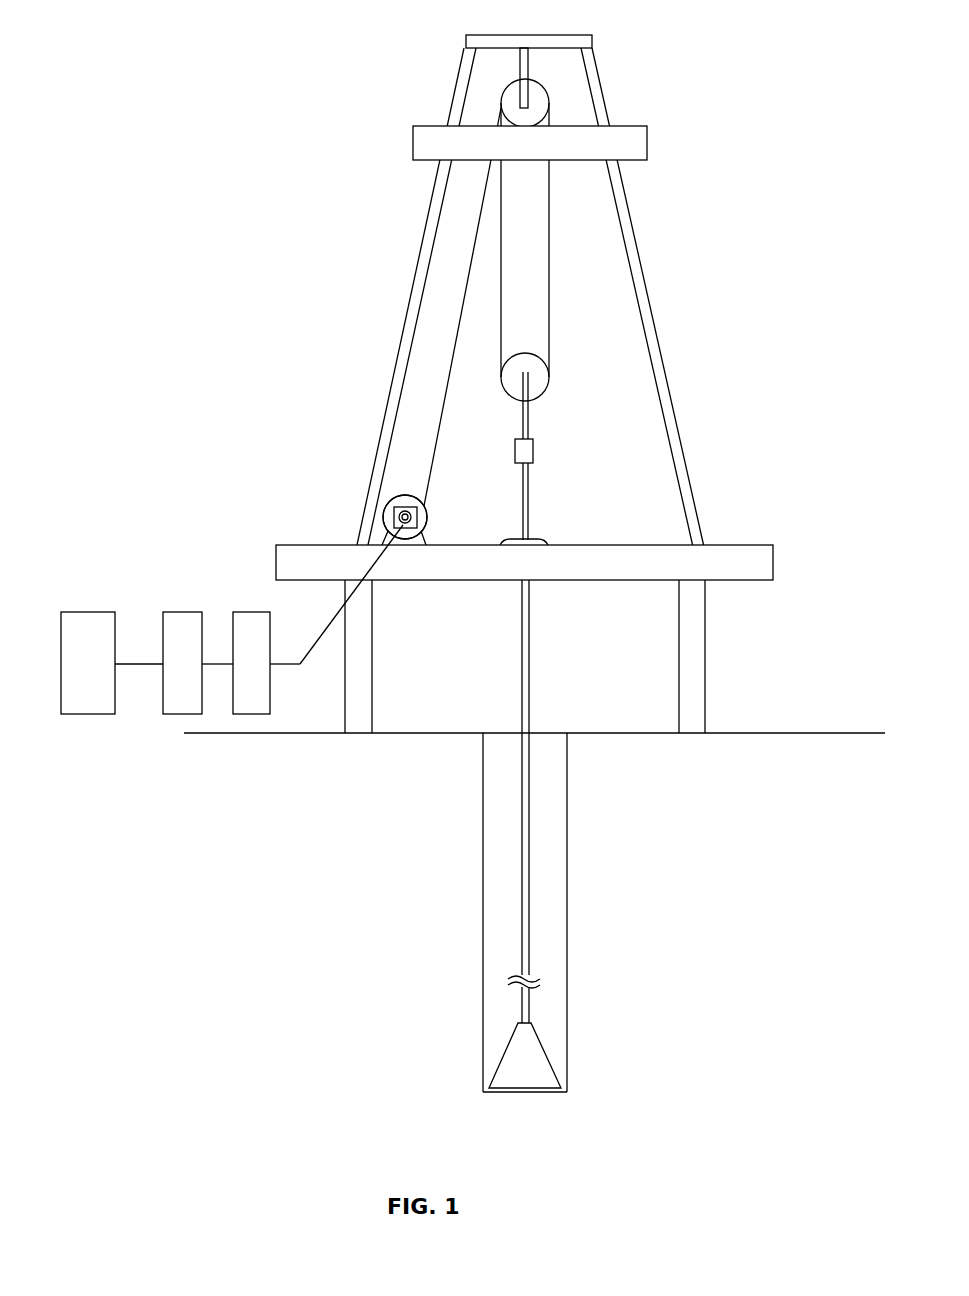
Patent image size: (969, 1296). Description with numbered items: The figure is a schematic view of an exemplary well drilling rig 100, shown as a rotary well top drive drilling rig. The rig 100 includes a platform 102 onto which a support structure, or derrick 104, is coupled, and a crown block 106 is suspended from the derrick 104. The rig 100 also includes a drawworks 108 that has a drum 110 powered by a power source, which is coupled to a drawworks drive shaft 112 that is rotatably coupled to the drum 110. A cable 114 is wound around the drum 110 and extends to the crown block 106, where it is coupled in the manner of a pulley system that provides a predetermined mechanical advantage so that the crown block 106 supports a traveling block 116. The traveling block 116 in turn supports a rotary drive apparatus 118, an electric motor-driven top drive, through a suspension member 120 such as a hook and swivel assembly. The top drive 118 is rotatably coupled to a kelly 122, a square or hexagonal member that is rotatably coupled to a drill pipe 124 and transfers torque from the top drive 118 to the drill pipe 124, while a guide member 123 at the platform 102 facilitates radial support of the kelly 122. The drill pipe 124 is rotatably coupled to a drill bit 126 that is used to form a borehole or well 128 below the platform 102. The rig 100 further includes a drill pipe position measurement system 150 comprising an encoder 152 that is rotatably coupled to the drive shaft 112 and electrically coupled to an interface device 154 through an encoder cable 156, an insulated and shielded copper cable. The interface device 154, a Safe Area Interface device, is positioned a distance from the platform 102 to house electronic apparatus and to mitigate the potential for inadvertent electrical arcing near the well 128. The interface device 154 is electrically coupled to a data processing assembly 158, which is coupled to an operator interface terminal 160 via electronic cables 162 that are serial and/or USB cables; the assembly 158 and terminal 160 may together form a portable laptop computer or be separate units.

The well drilling rig 100 is at (292, 57).
The platform 102 is at (763, 565).
The derrick 104 is at (585, 43).
The crown block 106 is at (533, 115).
The drawworks 108 is at (366, 478).
The drum 110 is at (397, 505).
The drawworks drive shaft 112 is at (398, 518).
The cable 114 is at (459, 316).
The traveling block 116 is at (538, 378).
The rotary drive apparatus 118 is at (533, 452).
The suspension member 120 is at (528, 422).
The kelly 122 is at (528, 508).
The guide member 123 is at (545, 543).
The drill pipe 124 is at (529, 672).
The drill bit 126 is at (522, 1070).
The well 128 is at (552, 908).
The drill pipe position measurement system 150 is at (211, 640).
The encoder 152 is at (427, 512).
The interface device 154 is at (252, 620).
The encoder cable 156 is at (320, 647).
The data processing assembly 158 is at (180, 620).
The operator interface terminal 160 is at (87, 620).
The electronic cables 162 is at (155, 667).